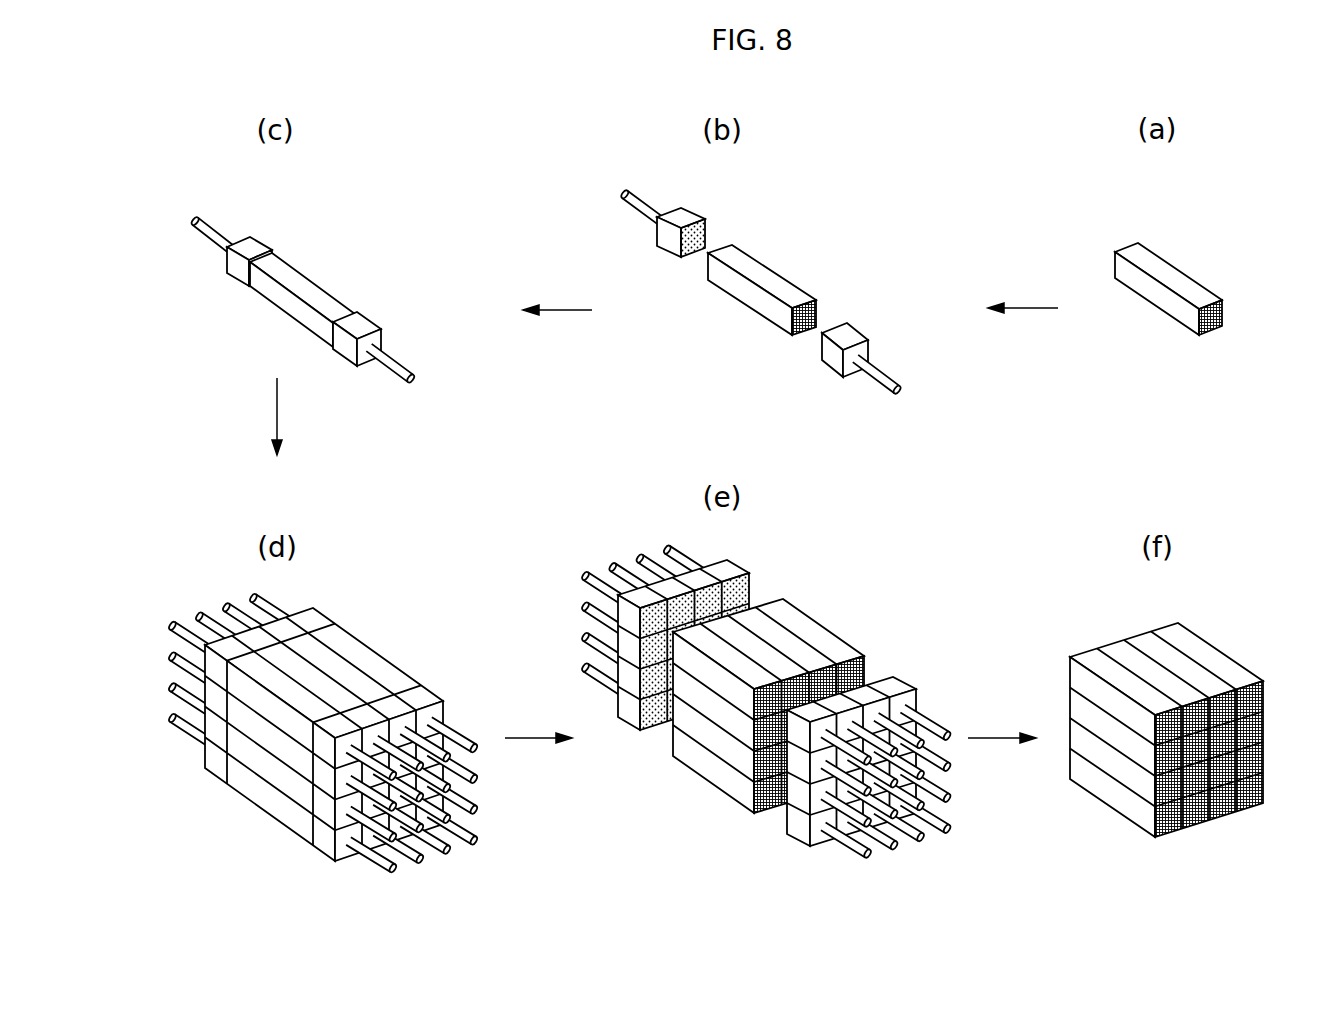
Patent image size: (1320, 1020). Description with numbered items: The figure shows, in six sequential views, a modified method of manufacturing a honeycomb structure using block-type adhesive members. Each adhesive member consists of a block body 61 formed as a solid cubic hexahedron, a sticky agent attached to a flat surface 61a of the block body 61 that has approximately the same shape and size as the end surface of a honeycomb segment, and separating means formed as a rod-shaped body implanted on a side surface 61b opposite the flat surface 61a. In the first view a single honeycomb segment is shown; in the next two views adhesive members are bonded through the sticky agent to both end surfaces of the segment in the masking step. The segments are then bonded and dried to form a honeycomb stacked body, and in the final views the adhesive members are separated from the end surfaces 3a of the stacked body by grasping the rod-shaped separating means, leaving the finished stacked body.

The end surface of honeycomb stacked body 3a is at (760, 597).
The block body 61 is at (845, 342).
The flat surface 61a is at (823, 361).
The side surface 61b is at (850, 378).